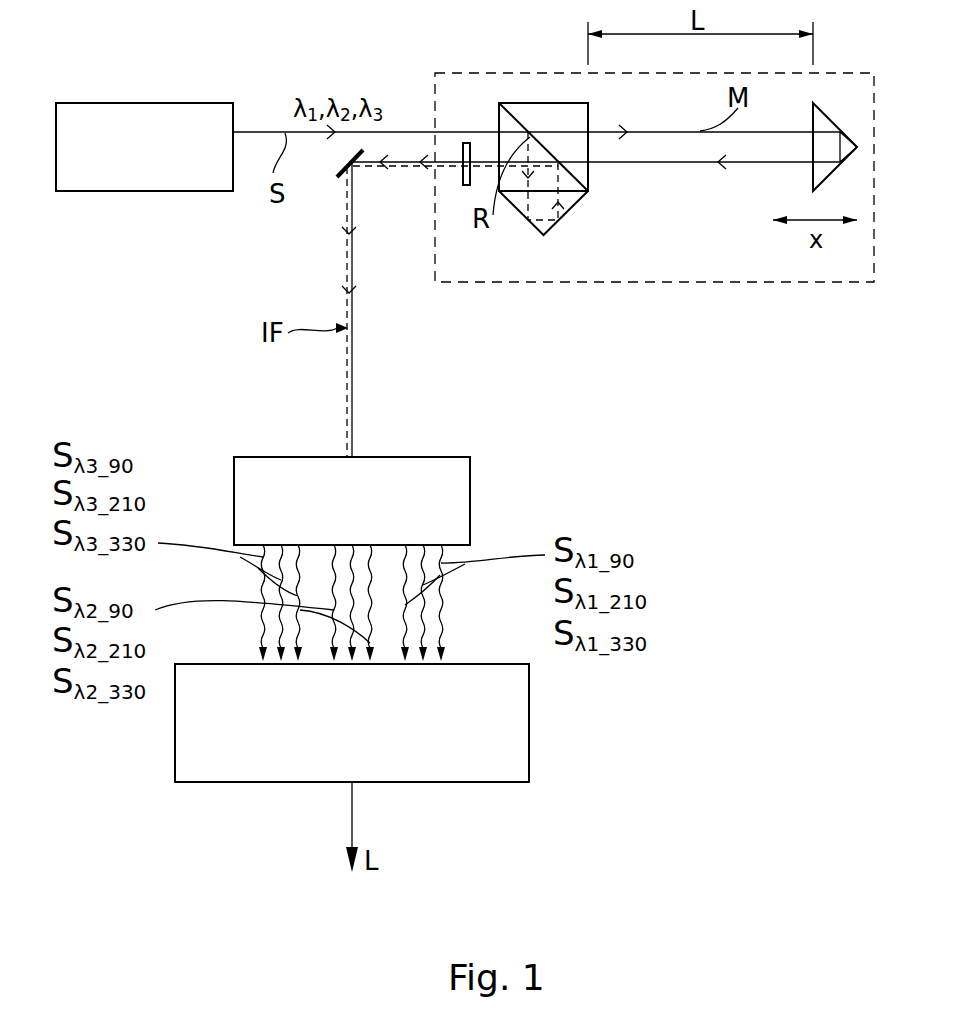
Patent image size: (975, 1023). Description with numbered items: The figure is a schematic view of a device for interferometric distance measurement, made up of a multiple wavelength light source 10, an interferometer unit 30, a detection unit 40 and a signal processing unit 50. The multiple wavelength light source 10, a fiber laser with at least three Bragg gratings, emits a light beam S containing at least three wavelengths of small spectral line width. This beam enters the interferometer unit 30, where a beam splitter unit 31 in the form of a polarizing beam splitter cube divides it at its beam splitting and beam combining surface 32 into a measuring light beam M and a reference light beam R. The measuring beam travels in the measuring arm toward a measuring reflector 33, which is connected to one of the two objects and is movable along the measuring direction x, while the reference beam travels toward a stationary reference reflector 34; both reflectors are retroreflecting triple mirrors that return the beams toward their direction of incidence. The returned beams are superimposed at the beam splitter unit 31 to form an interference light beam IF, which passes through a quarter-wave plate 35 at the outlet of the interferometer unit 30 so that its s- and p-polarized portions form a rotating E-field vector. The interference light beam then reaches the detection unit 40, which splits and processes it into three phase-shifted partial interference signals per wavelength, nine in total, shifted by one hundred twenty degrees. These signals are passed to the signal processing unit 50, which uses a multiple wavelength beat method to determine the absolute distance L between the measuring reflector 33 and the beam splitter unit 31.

The multiple wavelength light source 10 is at (102, 191).
The interferometer unit 30 is at (731, 277).
The beam splitter unit 31 is at (558, 110).
The beam splitting and beam combining surface 32 is at (517, 110).
The measuring reflector 33 is at (827, 110).
The reference reflector 34 is at (550, 232).
The λ/4 plate 35 is at (463, 181).
The detection unit 40 is at (470, 494).
The signal processing unit 50 is at (529, 730).